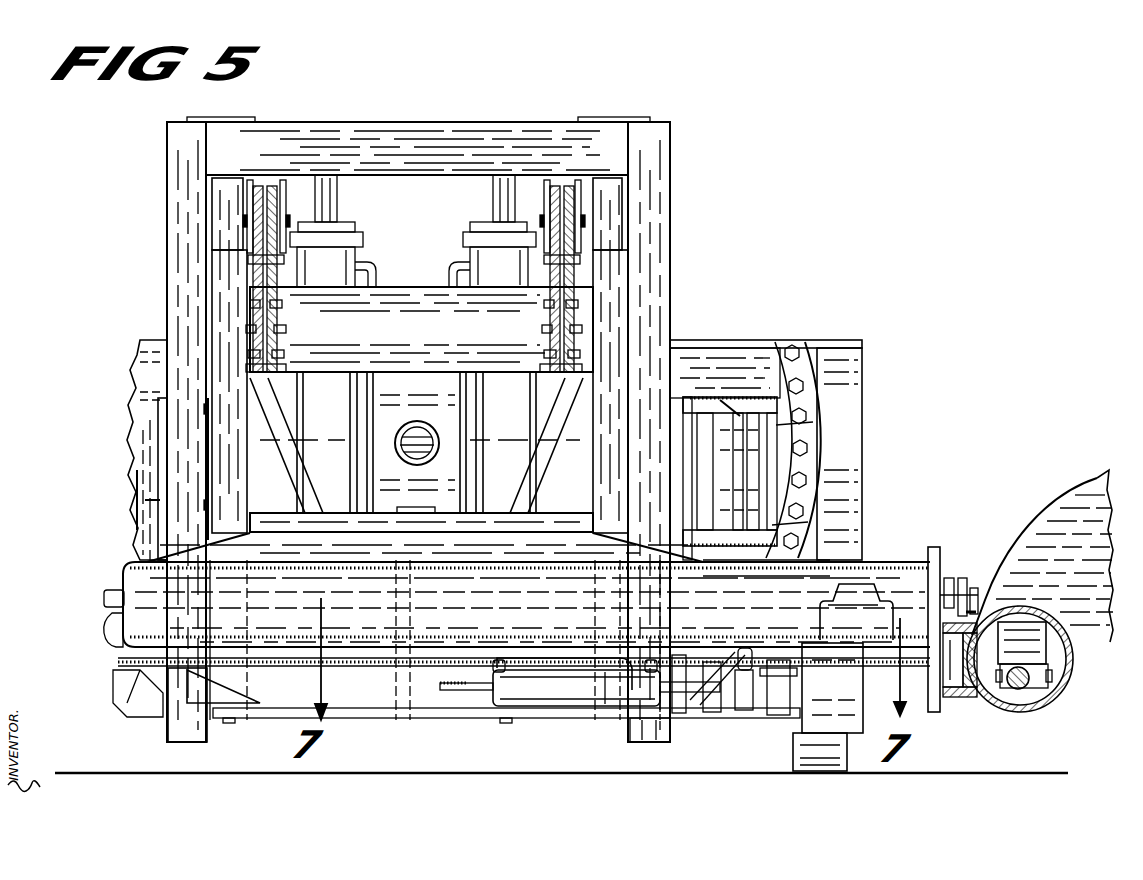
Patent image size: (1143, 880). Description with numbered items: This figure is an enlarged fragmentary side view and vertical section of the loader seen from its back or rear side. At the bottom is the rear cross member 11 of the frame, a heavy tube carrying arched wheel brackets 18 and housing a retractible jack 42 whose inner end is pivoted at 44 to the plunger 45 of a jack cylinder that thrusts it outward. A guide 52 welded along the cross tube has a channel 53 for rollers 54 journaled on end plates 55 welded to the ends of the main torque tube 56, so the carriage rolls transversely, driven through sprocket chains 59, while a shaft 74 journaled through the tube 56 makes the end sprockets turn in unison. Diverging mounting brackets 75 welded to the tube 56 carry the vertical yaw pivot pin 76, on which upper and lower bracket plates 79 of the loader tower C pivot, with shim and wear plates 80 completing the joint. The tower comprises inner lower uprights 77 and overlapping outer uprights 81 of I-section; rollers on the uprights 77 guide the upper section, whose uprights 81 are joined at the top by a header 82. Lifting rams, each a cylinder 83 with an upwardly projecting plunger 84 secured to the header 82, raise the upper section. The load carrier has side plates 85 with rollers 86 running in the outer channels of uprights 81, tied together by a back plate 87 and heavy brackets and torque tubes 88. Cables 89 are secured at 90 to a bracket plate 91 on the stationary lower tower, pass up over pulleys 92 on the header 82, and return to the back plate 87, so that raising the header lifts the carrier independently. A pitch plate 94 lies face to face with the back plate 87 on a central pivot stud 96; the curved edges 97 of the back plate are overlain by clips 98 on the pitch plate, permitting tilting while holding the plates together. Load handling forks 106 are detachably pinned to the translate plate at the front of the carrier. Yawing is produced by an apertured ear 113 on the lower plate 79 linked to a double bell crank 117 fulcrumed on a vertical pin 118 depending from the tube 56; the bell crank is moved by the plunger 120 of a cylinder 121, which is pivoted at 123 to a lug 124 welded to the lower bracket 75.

The loader tower C is at (672, 148).
The cross member 11 is at (1058, 680).
The arched bracket 18 is at (1081, 488).
The jack 42 is at (1042, 650).
The pivot 44 is at (1048, 676).
The plunger 45 is at (1020, 687).
The guide 52 is at (970, 698).
The channel 53 is at (958, 697).
The roller 54 is at (980, 624).
The end plate 55 is at (949, 574).
The torque tube 56 is at (928, 565).
The sprocket chain 59 is at (971, 608).
The shaft 74 is at (859, 630).
The mounting bracket 75 is at (327, 540).
The yaw pivot pin 76 is at (430, 718).
The upright 77 is at (230, 278).
The bracket plate 79 is at (387, 517).
The shim and wear plate 80 is at (403, 713).
The upright 81 is at (167, 250).
The header 82 is at (386, 122).
The cylinder 83 is at (470, 269).
The plunger 84 is at (493, 202).
The side plate 85 is at (697, 398).
The roller 86 is at (674, 500).
The back plate 87 is at (705, 403).
The brackets and torque tubes 88 is at (727, 410).
The cable 89 is at (272, 265).
The cable securing point 90 is at (262, 362).
The bracket plate 91 is at (434, 336).
The pulley 92 is at (260, 185).
The pitch plate 94 is at (852, 493).
The pivot stud 96 is at (422, 424).
The curved edge 97 is at (812, 400).
The clip 98 is at (810, 367).
The load handling fork 106 is at (795, 760).
The apertured ear 113 is at (702, 715).
The double bell crank 117 is at (737, 718).
The vertical pin 118 is at (755, 715).
The plunger 120 is at (693, 718).
The cylinder 121 is at (603, 705).
The pivot 123 is at (472, 682).
The lug 124 is at (458, 690).